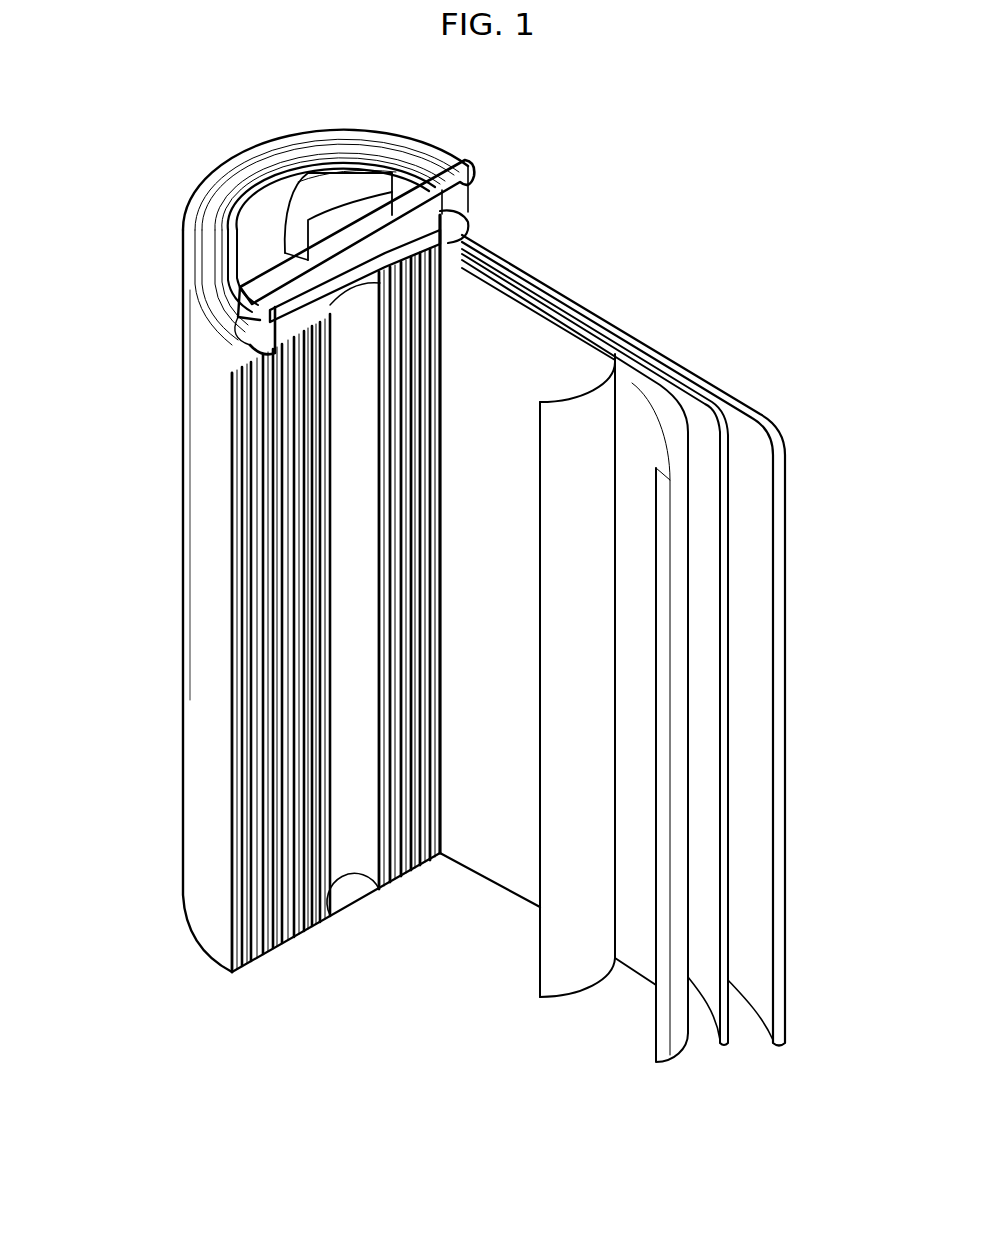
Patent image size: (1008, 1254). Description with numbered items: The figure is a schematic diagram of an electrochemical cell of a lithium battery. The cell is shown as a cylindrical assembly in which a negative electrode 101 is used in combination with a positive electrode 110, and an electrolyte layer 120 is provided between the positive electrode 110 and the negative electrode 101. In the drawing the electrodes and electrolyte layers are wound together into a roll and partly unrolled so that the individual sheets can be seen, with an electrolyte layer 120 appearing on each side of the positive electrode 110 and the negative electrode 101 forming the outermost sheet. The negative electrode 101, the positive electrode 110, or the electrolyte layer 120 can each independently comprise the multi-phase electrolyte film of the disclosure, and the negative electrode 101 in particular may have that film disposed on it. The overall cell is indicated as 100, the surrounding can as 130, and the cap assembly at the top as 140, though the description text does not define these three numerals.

The secondary battery 100 is at (676, 160).
The negative electrode 101 is at (773, 430).
The positive electrode 110 is at (637, 378).
The electrolyte layer 120 is at (557, 303).
The can 130 is at (197, 601).
The cap assembly 140 is at (323, 182).